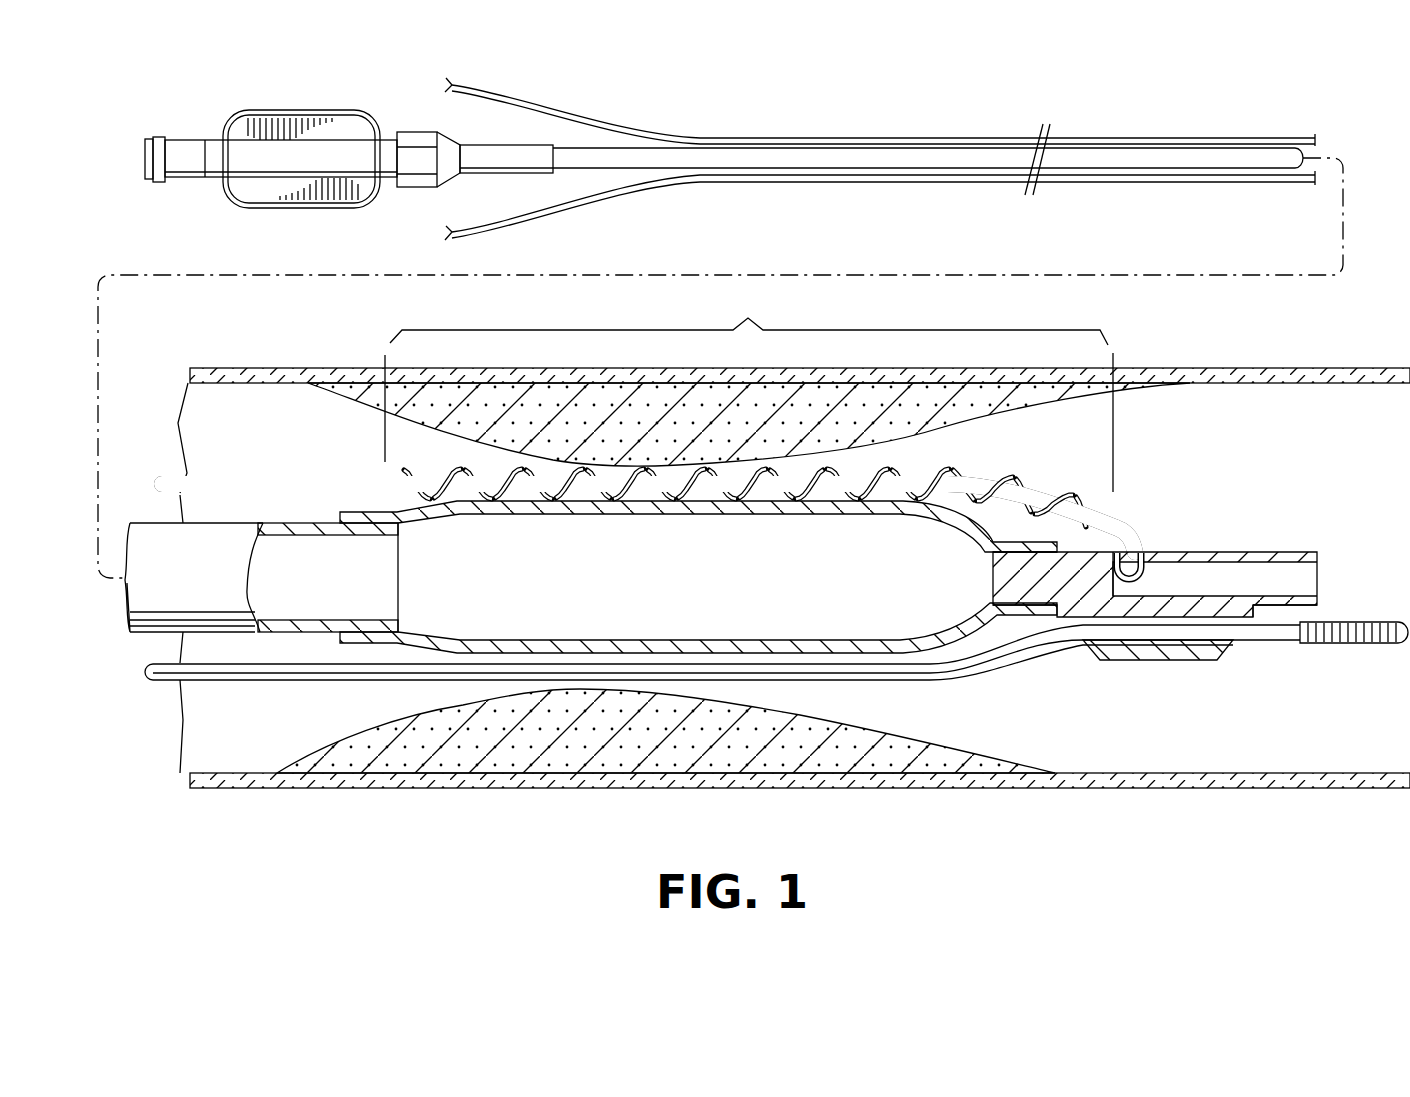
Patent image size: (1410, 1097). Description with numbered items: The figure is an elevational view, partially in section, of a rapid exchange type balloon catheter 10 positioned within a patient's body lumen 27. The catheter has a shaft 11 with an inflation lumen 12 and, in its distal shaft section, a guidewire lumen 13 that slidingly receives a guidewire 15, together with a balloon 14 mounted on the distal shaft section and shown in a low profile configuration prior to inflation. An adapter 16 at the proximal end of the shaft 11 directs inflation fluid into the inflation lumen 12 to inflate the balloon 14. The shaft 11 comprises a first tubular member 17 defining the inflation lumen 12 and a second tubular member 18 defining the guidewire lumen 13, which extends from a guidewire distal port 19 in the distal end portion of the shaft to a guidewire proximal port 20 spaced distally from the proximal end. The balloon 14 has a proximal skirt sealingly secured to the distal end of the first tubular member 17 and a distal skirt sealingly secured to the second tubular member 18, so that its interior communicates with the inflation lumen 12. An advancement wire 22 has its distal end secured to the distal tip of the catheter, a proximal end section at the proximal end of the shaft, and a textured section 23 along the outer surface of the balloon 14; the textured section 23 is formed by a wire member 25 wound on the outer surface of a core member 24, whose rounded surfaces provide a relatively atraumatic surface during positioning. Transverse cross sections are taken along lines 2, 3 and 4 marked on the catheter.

The balloon catheter 10 is at (802, 104).
The shaft 11 is at (852, 170).
The inflation lumen 12 is at (325, 607).
The guidewire lumen 13 is at (1187, 646).
The balloon 14 is at (412, 652).
The guidewire 15 is at (1118, 183).
The adapter 16 is at (218, 137).
The first tubular member 17 is at (313, 522).
The second tubular member 18 is at (1113, 662).
The guidewire distal port 19 is at (1233, 645).
The guidewire proximal port 20 is at (1085, 647).
The advancement wire 22 is at (1200, 139).
The textured section 23 is at (749, 389).
The core member 24 is at (640, 477).
The wire member 25 is at (497, 467).
The body lumen 27 is at (1280, 410).
The section line 2- 2 is at (217, 467).
The section line 3- 3 is at (898, 485).
The section line 4- 4 is at (1130, 512).